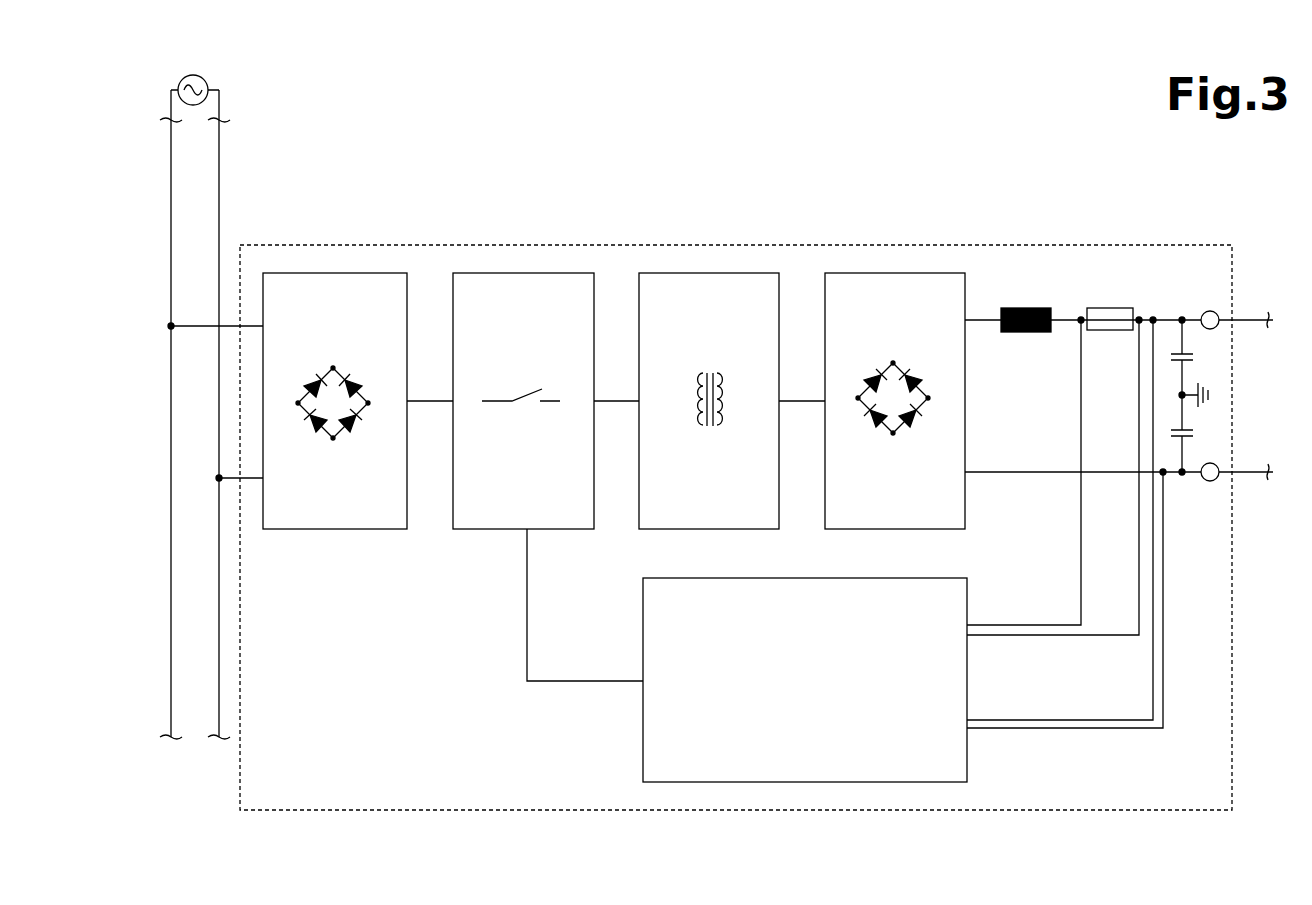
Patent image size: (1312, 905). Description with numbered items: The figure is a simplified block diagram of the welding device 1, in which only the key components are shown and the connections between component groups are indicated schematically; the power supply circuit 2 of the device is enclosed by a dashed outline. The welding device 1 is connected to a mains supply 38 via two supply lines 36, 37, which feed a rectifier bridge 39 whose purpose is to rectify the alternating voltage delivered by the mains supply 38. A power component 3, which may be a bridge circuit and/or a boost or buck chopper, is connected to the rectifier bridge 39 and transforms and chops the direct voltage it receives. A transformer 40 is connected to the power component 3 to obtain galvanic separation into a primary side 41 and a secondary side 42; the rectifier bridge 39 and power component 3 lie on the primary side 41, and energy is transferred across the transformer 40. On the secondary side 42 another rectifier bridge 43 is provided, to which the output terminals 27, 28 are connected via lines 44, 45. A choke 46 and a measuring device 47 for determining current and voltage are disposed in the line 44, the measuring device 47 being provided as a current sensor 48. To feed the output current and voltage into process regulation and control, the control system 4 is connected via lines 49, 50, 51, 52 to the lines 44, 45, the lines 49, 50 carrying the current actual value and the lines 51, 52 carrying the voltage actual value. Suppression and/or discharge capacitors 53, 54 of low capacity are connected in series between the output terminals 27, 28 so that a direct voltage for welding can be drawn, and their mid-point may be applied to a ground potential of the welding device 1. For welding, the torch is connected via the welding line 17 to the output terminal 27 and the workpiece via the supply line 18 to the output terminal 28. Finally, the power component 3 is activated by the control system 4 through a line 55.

The welding device 1 is at (618, 255).
The power supply circuit 2 is at (507, 182).
The power component 3 is at (526, 293).
The control system 4 is at (848, 758).
The welding line 17 is at (1247, 312).
The supply line 18 is at (1253, 480).
The output terminal 27 is at (1210, 311).
The output terminal 28 is at (1208, 482).
The supply line 36 is at (208, 325).
The supply line 37 is at (230, 478).
The mains supply 38 is at (258, 170).
The rectifier bridge 39 is at (350, 295).
The transformer 40 is at (714, 293).
The primary side 41 is at (446, 694).
The secondary side 42 is at (1103, 666).
The rectifier bridge 43 is at (885, 302).
The line 44 is at (1062, 312).
The line 45 is at (1032, 470).
The choke 46 is at (1022, 308).
The measuring device 47 is at (1127, 287).
The current sensor 48 is at (1110, 308).
The line 49 is at (990, 623).
The line 50 is at (1037, 633).
The line 51 is at (992, 720).
The line 52 is at (1062, 730).
The suppression and/or discharge capacitor 53 is at (1207, 357).
The suppression and/or discharge capacitor 54 is at (1203, 433).
The line 55 is at (585, 683).